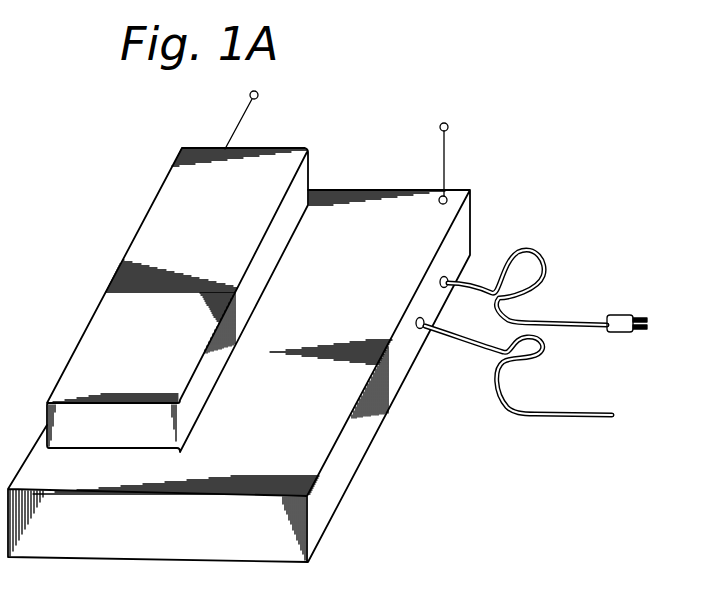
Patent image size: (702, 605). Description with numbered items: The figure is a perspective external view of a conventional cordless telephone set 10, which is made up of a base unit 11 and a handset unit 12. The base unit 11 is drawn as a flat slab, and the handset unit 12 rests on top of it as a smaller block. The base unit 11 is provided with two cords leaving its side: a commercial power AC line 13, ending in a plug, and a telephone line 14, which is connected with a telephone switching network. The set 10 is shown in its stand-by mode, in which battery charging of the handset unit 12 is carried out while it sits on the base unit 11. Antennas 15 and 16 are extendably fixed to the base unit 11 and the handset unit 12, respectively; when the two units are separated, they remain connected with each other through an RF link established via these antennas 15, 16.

The cordless telephone set 10 is at (115, 120).
The base unit 11 is at (368, 188).
The handset unit 12 is at (116, 272).
The commercial power AC line 13 is at (560, 318).
The telephone line 14 is at (546, 420).
The antenna 15 is at (448, 151).
The antenna 16 is at (232, 126).